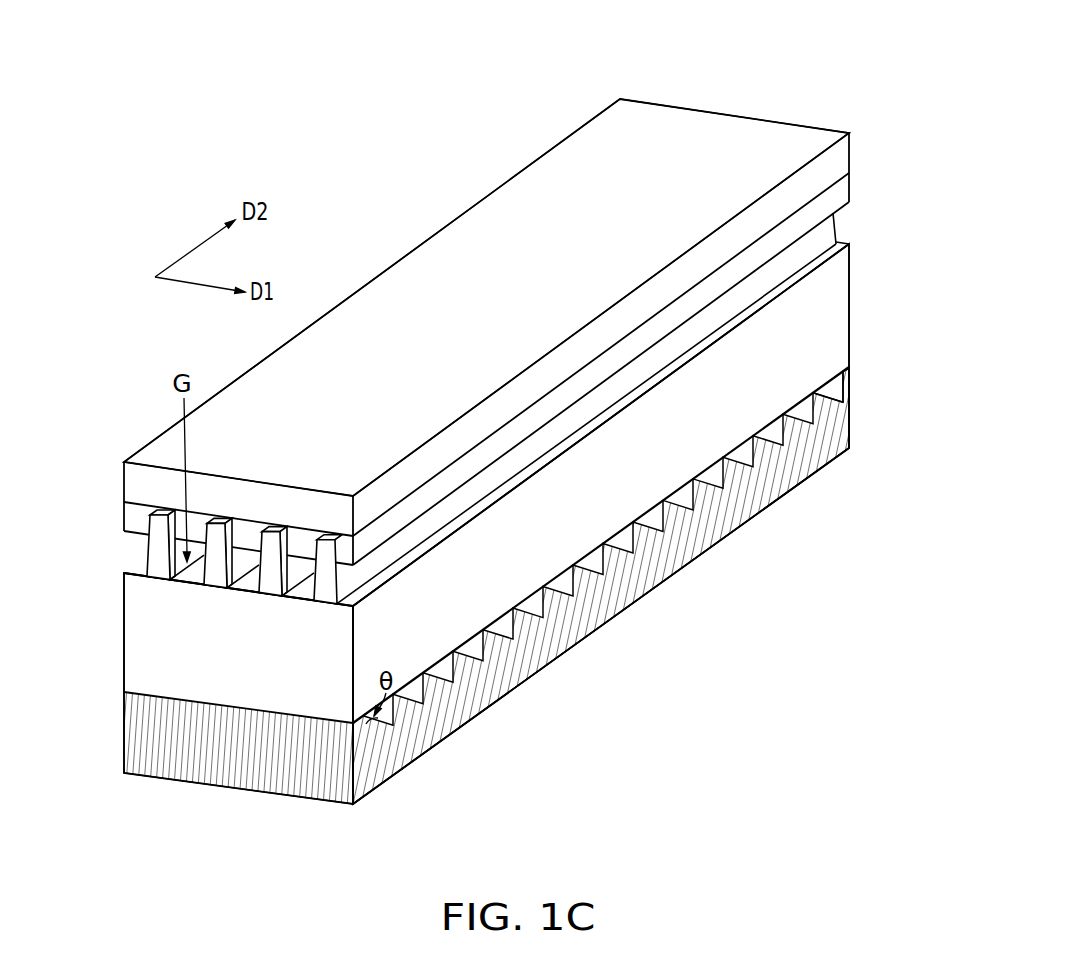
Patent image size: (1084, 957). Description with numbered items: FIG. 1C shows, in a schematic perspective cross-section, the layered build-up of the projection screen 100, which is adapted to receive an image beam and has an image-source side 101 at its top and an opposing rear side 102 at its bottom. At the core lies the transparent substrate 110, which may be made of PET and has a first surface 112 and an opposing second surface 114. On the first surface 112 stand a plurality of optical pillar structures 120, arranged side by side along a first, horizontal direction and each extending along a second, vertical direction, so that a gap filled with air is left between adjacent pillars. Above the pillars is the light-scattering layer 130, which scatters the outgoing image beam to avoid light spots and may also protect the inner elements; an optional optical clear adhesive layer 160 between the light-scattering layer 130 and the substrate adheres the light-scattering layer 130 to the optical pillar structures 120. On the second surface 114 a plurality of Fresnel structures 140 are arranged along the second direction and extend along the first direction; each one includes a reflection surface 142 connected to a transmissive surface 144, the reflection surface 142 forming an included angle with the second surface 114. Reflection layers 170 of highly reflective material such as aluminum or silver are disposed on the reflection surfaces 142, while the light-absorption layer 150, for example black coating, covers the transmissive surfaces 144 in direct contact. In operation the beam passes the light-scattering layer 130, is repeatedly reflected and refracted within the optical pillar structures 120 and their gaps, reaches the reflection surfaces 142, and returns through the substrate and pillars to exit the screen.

The projection screen 100 is at (812, 810).
The image-source side 101 is at (848, 88).
The rear side 102 is at (642, 655).
The transparent substrate 110 is at (845, 300).
The first surface 112 is at (130, 565).
The second surface 114 is at (135, 694).
The optical pillar structures 120 is at (146, 550).
The light-scattering layer 130 is at (835, 160).
The Fresnel structures 140 is at (685, 496).
The reflection surface 142 is at (838, 392).
The transmissive surface 144 is at (833, 385).
The light-absorption layer 150 is at (845, 433).
The optical clear adhesive layer 160 is at (132, 513).
The reflection layers 170 is at (793, 425).